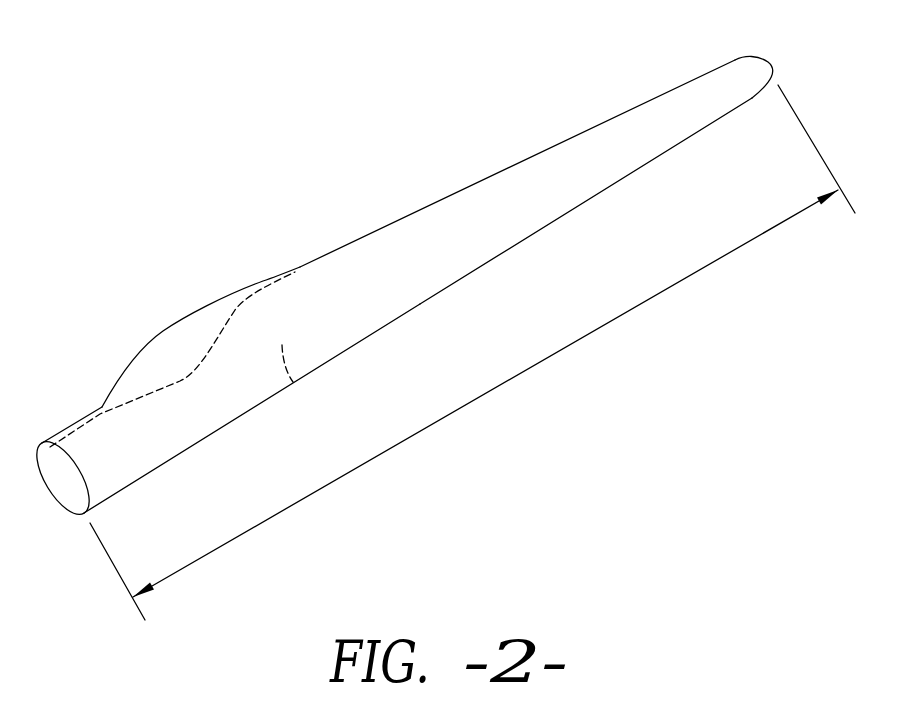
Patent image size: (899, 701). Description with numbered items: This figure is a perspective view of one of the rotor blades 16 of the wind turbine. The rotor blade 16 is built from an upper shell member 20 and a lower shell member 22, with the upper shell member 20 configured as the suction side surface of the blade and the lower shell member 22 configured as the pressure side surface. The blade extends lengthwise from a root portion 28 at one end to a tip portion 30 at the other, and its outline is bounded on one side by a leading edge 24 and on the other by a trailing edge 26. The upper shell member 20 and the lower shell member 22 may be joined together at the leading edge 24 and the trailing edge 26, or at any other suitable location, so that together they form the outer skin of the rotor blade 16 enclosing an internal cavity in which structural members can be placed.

The rotor blade 16 is at (436, 320).
The upper shell member 20 is at (215, 367).
The lower shell member 22 is at (290, 380).
The leading edge 24 is at (500, 252).
The trailing edge 26 is at (507, 163).
The root portion 28 is at (103, 433).
The tip portion 30 is at (723, 85).